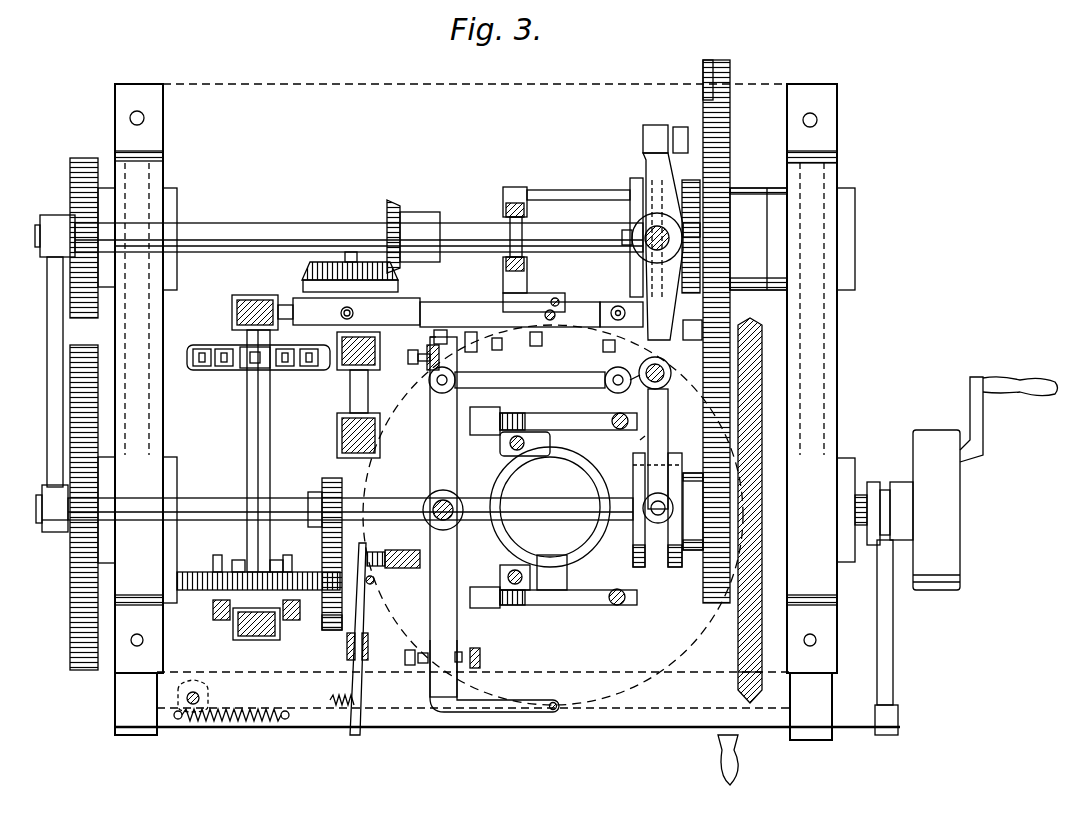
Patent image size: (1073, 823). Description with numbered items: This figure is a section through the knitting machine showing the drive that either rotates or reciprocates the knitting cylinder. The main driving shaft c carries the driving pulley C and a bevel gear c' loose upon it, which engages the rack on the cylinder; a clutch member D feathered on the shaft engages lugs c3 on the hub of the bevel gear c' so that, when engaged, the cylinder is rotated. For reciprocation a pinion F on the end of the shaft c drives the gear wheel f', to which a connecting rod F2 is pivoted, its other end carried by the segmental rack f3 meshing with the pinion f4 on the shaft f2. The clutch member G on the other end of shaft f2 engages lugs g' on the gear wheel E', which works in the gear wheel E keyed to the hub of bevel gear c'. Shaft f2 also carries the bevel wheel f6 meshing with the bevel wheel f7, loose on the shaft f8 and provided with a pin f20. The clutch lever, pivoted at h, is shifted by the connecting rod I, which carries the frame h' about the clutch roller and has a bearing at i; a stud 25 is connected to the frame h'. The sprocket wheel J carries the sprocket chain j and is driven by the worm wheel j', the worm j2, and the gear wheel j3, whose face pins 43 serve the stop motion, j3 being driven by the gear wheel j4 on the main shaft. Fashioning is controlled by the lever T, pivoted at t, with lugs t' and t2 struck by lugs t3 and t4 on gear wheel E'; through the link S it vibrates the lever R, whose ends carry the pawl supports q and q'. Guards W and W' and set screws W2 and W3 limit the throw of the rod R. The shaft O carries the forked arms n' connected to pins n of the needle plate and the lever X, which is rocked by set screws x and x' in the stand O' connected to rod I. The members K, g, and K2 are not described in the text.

The shaft f2 is at (272, 224).
The segmental rack f3 is at (72, 160).
The pinion f4 is at (55, 215).
The gear wheel f' is at (64, 507).
The connecting rod F2 is at (48, 440).
The pinion F is at (65, 535).
The bevel wheel f6 is at (392, 210).
The pin f20 is at (352, 262).
The bevel wheel f7 is at (305, 270).
The stud 25 is at (340, 314).
The bearing i is at (285, 305).
The sprocket chain j is at (256, 374).
The sprocket wheel J is at (228, 370).
The shaft f8 is at (350, 398).
The frame h' is at (476, 248).
The connecting rod I is at (460, 325).
The connecting bar K is at (630, 210).
The support q is at (510, 304).
The lever T is at (648, 165).
The lug t' is at (661, 123).
The gear wheel E' is at (690, 88).
The clutch member G is at (630, 182).
The pivot t is at (636, 238).
The pulley g is at (691, 221).
The lug g' is at (692, 318).
The gear wheel E is at (716, 357).
The lug t3 is at (730, 240).
The lug t4 is at (732, 313).
The link S is at (575, 382).
The lug t2 is at (668, 385).
The pivot h is at (619, 392).
The pin n is at (658, 456).
The clutch member D is at (670, 570).
The lug c3 is at (693, 473).
The forked arm n' is at (553, 515).
The driving pulley C is at (580, 520).
The bracket K2 is at (640, 438).
The gear wheel j4 is at (328, 480).
The lever R is at (430, 470).
The shaft O is at (420, 380).
The support q' is at (499, 676).
The set screw x is at (429, 337).
The set screw W3 is at (408, 356).
The guard W' is at (413, 365).
The lever X is at (495, 342).
The set screw x' is at (551, 334).
The stand O' is at (595, 350).
The set screw W2 is at (405, 656).
The guard W is at (486, 654).
The worm j2 is at (240, 560).
The worm wheel j' is at (241, 620).
The gear wheel j3 is at (330, 630).
The pins 43 is at (368, 552).
The main driving shaft c is at (985, 483).
The bevel gear c' is at (731, 685).